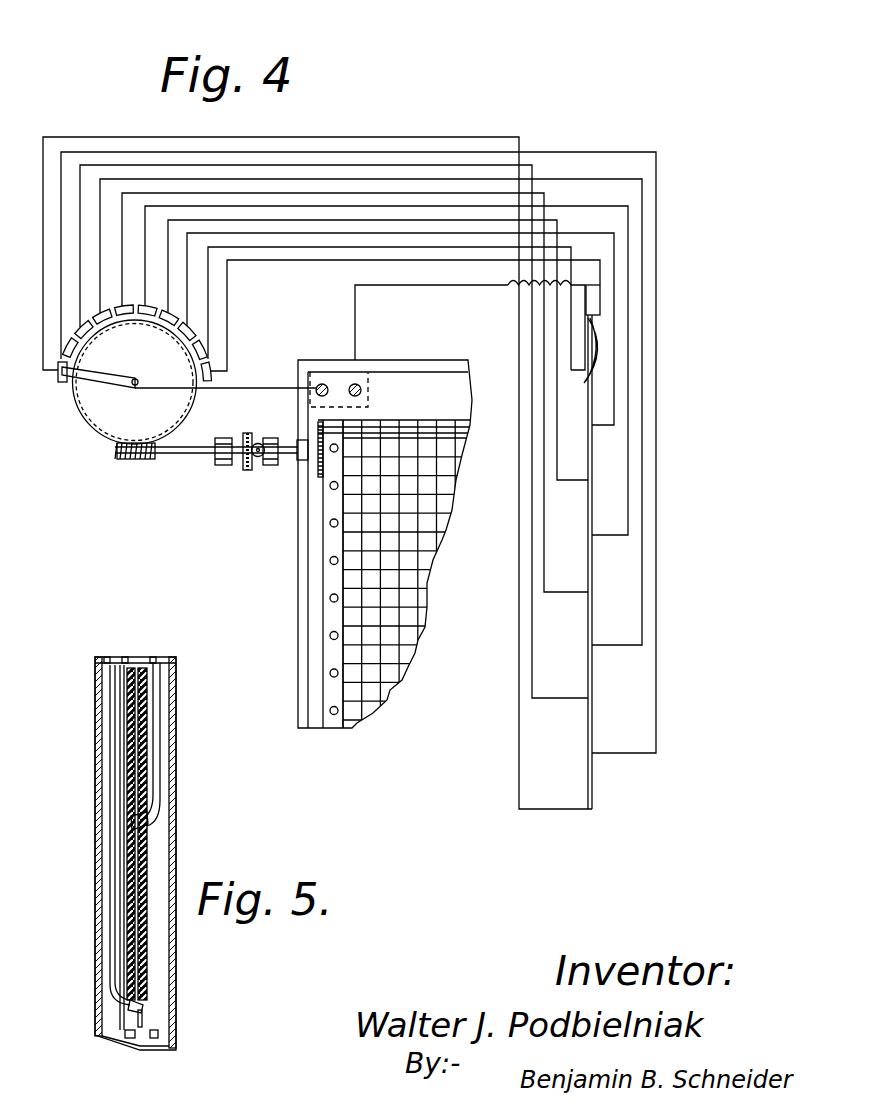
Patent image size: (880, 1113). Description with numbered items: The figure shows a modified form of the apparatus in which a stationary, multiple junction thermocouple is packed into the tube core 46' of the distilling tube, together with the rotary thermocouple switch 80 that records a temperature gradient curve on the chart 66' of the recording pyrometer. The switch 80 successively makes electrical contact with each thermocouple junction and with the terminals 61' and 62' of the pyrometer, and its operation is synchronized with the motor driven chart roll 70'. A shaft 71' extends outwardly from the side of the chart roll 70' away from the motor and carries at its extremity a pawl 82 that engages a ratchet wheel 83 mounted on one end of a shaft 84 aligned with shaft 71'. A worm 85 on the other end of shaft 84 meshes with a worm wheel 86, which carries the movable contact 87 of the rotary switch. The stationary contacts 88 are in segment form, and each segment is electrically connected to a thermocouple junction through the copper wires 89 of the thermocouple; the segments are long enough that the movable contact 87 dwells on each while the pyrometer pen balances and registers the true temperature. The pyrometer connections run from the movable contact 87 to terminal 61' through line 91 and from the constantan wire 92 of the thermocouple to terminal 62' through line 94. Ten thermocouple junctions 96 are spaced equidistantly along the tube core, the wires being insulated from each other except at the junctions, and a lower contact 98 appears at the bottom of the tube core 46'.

In FIG. 4, the rotary thermocouple switch 80 is at (238, 362).
In FIG. 4, the pawl 82 is at (259, 458).
In FIG. 4, the ratchet wheel 83 is at (245, 468).
In FIG. 4, the shaft 84 is at (186, 455).
In FIG. 4, the worm 85 is at (130, 461).
In FIG. 4, the worm wheel 86 is at (190, 421).
In FIG. 4, the movable contact 87 is at (92, 382).
In FIG. 4, the stationary contacts 88 is at (58, 379).
In FIG. 4, the copper wires 89 is at (558, 372).
In FIG. 5, the copper wires 89 is at (148, 740).
In FIG. 4, the line 91 is at (275, 370).
In FIG. 4, the constantan wire 92 is at (588, 300).
In FIG. 4, the line 94 is at (450, 285).
In FIG. 4, the thermocouple junctions 96 is at (588, 424).
In FIG. 5, the thermocouple junctions 96 is at (133, 822).
In FIG. 5, the lower contact 98 is at (143, 1013).
In FIG. 4, the terminal 61' is at (336, 364).
In FIG. 4, the terminal 62' is at (384, 359).
In FIG. 4, the chart 66' is at (401, 574).
In FIG. 4, the chart roll 70' is at (362, 544).
In FIG. 4, the shaft 71' is at (287, 484).
In FIG. 5, the tube core 46' is at (175, 853).